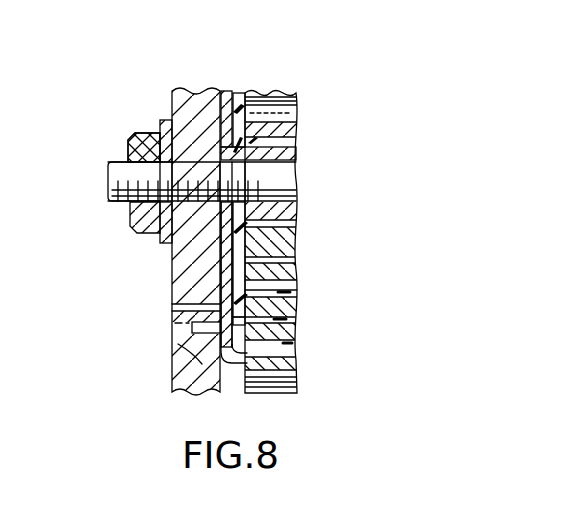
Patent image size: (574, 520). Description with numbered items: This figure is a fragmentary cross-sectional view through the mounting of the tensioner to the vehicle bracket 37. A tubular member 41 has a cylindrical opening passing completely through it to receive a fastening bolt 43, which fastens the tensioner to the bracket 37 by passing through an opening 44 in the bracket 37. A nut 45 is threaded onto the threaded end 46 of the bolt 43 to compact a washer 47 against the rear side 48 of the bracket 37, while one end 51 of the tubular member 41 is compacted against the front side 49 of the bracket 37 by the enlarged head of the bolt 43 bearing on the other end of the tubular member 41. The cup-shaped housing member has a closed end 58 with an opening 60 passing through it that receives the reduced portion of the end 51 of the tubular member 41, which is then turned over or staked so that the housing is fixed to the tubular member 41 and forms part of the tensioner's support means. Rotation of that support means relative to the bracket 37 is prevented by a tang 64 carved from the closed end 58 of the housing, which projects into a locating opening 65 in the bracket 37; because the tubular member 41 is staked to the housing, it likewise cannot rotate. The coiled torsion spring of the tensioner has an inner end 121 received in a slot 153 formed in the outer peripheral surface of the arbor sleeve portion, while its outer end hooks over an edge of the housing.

The bracket 37 is at (192, 91).
The front side 49 is at (228, 143).
The rear side 48 is at (170, 113).
The opening 44 is at (160, 133).
The threaded end 46 is at (122, 177).
The nut 45 is at (140, 220).
The washer 47 is at (162, 240).
The end 51 is at (222, 211).
The closed end 58 is at (183, 303).
The tang 64 is at (194, 328).
The locating opening 65 is at (178, 366).
The opening 60 is at (252, 102).
The inner end 121 is at (280, 113).
The slot 153 is at (285, 124).
The tubular member 41 is at (290, 153).
The fastening bolt 43 is at (283, 180).